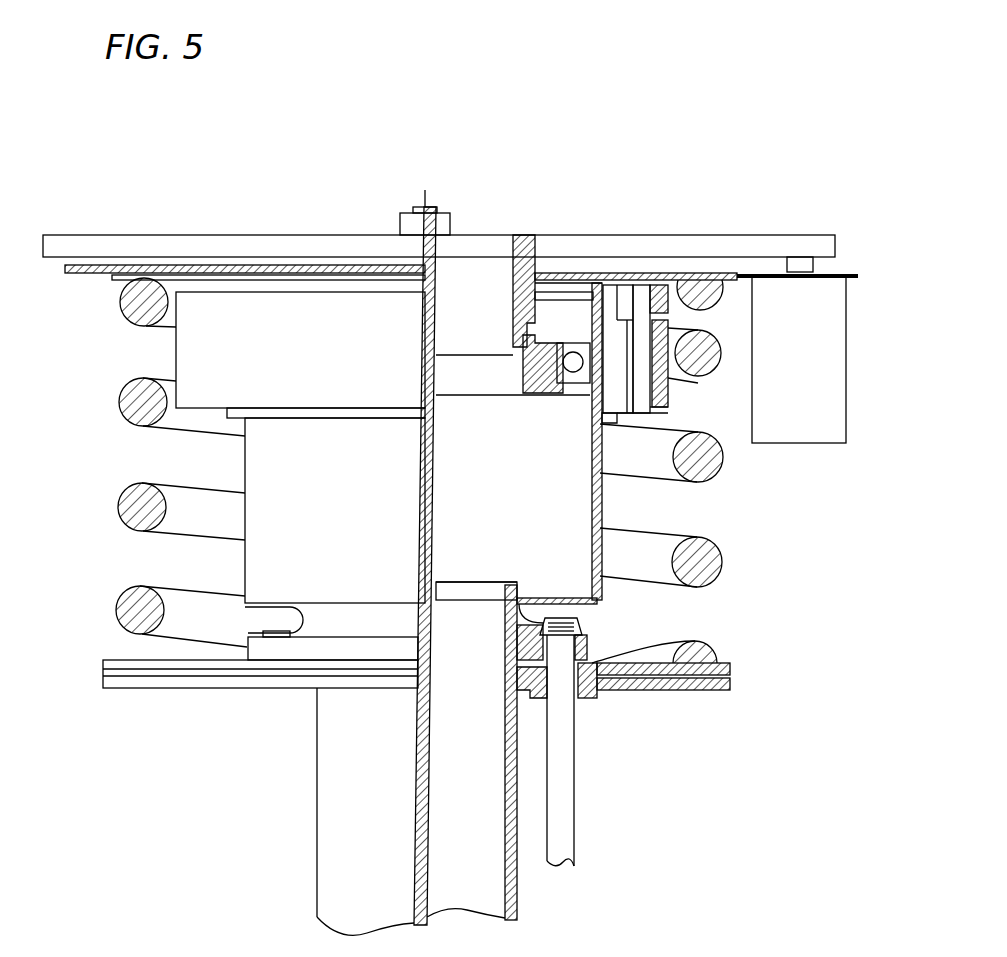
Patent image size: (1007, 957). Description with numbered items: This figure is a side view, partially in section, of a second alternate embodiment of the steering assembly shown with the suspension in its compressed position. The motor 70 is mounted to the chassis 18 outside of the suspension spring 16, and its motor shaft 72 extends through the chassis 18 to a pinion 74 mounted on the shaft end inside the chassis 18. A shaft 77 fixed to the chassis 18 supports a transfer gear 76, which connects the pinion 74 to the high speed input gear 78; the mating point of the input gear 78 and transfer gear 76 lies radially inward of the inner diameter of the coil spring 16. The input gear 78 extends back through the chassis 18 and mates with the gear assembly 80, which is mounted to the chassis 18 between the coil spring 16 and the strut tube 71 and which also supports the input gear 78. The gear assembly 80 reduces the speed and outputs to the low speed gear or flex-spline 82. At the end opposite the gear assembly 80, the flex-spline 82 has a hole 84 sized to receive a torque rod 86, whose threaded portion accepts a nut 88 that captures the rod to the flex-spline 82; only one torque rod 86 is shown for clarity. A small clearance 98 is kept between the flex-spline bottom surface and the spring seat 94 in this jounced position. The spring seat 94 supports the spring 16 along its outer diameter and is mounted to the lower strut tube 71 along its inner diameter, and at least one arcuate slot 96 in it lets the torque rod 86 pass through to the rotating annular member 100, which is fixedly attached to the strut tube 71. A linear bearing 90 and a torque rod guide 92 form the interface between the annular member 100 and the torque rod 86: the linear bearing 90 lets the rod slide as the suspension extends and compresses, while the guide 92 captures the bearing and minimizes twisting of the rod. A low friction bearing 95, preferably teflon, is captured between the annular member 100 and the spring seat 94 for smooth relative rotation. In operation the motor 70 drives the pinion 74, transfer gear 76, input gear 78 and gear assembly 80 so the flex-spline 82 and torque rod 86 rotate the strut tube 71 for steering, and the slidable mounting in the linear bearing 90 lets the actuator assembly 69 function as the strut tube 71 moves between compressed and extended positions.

The suspension spring 16 is at (737, 561).
The chassis 18 is at (276, 273).
The actuator assembly 69 is at (760, 481).
The motor 70 is at (810, 443).
The strut tube 71 is at (330, 807).
The motor shaft 72 is at (826, 258).
The pinion 74 is at (766, 236).
The transfer gear 76 is at (665, 235).
The shaft 77 is at (176, 347).
The input gear 78 is at (527, 235).
The gear assembly 80 is at (660, 411).
The flex-spline 82 is at (592, 477).
The hole 84 is at (583, 650).
The torque rod 86 is at (563, 792).
The nut 88 is at (545, 617).
The linear bearing 90 is at (537, 705).
The torque rod guide 92 is at (596, 695).
The spring seat 94 is at (123, 660).
The bearing 95 is at (278, 673).
The arcuate slot 96 is at (594, 662).
The clearance 98 is at (582, 633).
The annular member 100 is at (355, 688).